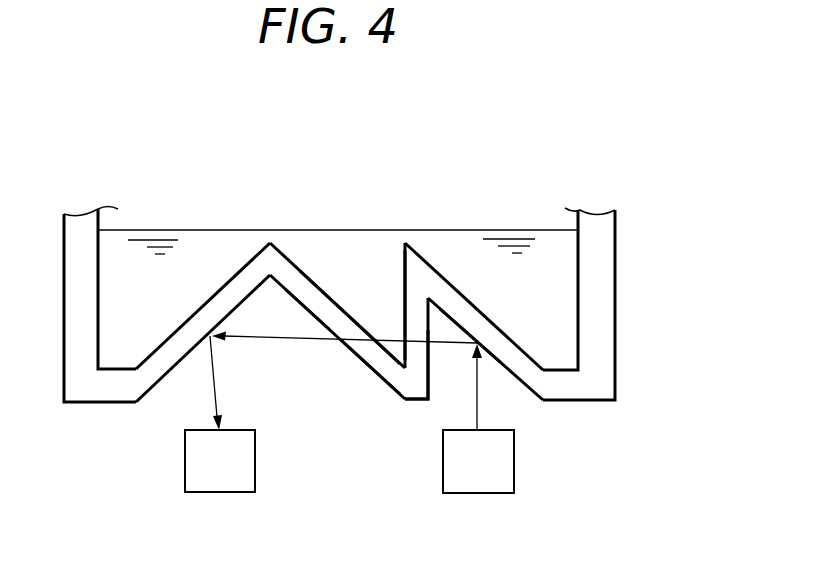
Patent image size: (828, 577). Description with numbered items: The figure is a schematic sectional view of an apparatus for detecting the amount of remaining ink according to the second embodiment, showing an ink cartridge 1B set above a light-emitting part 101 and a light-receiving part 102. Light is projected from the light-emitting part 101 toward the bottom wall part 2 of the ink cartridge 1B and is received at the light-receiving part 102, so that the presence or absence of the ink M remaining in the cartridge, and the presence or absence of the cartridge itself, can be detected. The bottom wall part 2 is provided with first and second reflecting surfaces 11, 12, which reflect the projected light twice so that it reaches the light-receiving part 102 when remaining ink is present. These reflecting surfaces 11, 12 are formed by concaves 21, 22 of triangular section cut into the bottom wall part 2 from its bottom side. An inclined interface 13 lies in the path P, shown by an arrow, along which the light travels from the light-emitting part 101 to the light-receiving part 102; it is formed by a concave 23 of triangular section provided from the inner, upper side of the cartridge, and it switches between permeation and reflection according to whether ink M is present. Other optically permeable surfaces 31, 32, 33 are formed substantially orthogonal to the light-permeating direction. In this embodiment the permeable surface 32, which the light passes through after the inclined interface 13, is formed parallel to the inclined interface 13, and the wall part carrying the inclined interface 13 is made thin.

The ink cartridge 1B is at (630, 238).
The bottom wall part 2 is at (581, 385).
The first reflecting surface 11 is at (517, 380).
The second reflecting surface 12 is at (167, 374).
The inclined interface 13 is at (302, 270).
The concave 21 is at (448, 371).
The concave 22 is at (304, 370).
The concave 23 is at (346, 286).
The permeable surface 31 is at (438, 397).
The permeable surface 32 is at (372, 366).
The permeable surface 33 is at (403, 287).
The ink M is at (522, 229).
The path P is at (243, 341).
The light-emitting part 101 is at (478, 493).
The light-receiving part 102 is at (223, 492).